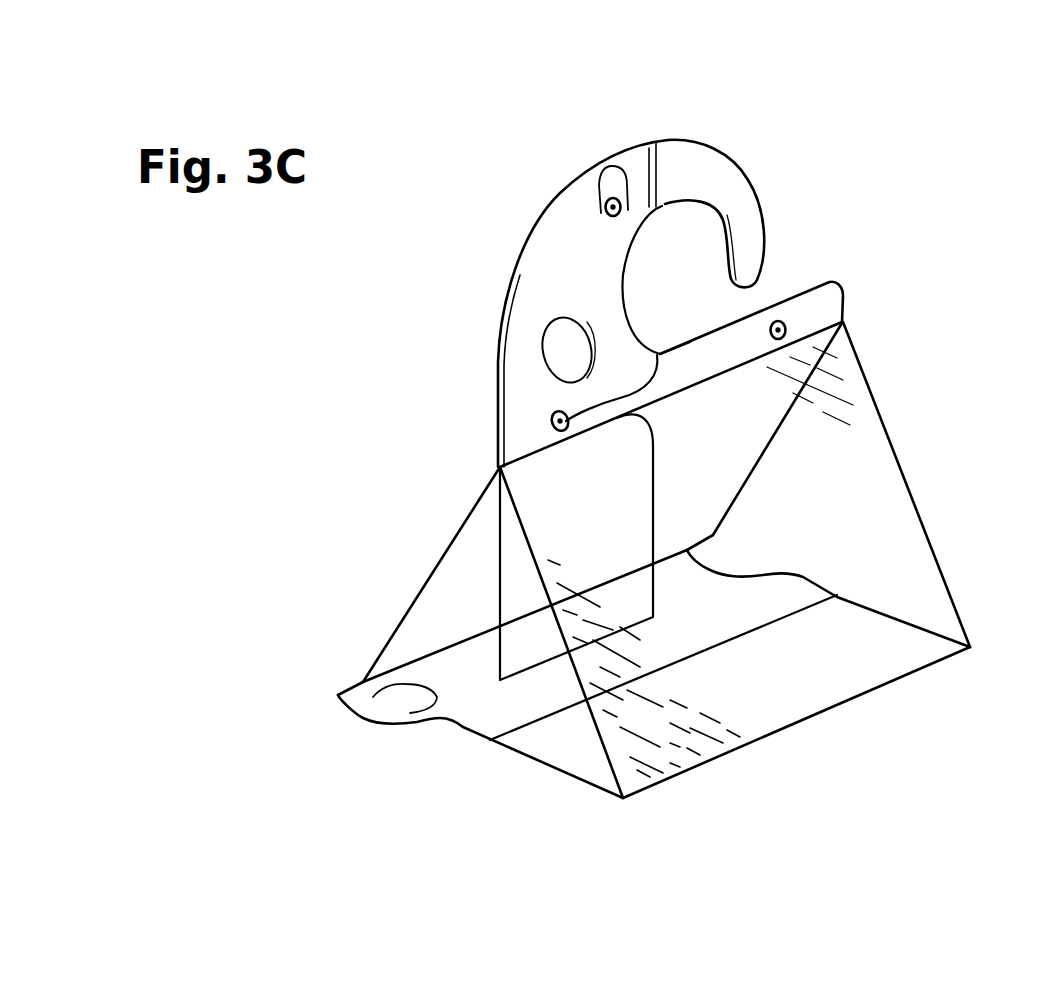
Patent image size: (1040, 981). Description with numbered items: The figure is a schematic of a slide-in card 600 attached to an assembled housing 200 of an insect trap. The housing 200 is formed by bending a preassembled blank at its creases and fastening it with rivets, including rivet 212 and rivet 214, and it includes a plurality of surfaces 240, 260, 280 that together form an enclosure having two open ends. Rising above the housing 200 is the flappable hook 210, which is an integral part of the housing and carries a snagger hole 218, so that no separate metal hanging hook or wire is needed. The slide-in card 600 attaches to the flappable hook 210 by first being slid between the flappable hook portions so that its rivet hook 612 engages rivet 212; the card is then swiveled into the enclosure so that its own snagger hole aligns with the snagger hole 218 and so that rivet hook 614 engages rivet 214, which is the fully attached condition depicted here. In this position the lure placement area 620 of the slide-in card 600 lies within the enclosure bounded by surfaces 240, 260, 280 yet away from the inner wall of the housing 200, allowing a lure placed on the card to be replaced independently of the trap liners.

The rivet hook 612 is at (620, 178).
The rivet 212 is at (606, 203).
The flappable hook 210 is at (748, 220).
The snagger hole 218 is at (558, 353).
The slide-in card 600 is at (543, 410).
The rivet hook 614 is at (600, 410).
The rivet 214 is at (553, 424).
The assembled housing 200 is at (766, 374).
The surface 280 is at (430, 568).
The lure placement area 620 is at (527, 608).
The surface 260 is at (750, 683).
The surface 240 is at (550, 743).